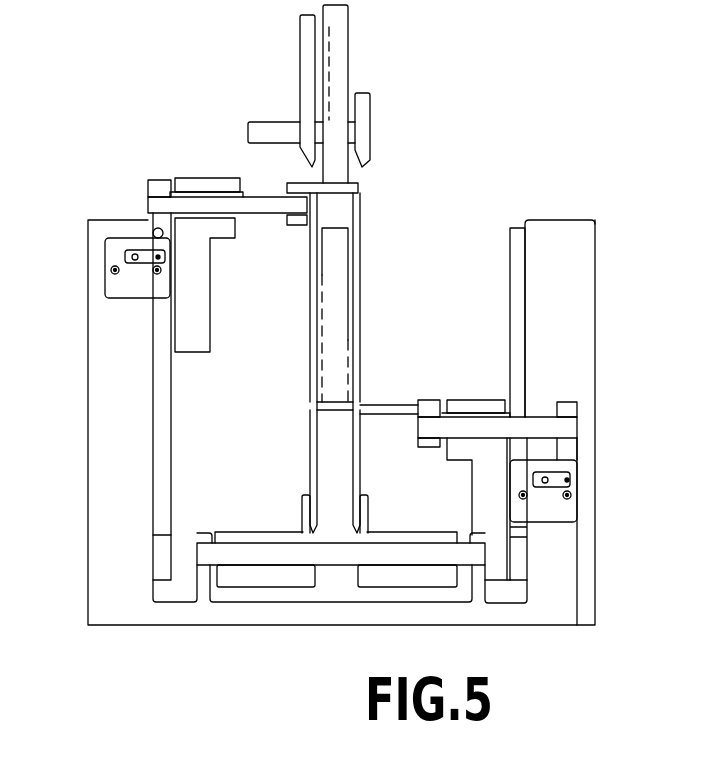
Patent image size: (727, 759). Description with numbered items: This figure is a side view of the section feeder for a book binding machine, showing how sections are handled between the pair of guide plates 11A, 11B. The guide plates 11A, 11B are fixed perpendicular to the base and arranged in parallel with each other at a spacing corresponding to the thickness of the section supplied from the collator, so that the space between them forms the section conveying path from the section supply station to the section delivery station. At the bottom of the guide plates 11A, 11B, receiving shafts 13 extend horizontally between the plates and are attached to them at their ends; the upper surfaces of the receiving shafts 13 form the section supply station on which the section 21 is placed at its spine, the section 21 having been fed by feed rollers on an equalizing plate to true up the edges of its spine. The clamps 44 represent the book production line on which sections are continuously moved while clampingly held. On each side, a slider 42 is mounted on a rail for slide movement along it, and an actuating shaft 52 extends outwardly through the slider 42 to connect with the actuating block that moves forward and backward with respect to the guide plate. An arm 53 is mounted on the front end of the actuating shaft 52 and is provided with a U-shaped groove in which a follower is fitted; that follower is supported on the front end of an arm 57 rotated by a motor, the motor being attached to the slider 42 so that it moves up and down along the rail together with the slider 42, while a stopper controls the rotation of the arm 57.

The guide plate 11A is at (363, 242).
The guide plate 11B is at (310, 433).
The receiving shaft 13 is at (333, 397).
The section 21 is at (345, 68).
The slider 42 is at (183, 318).
The clamp 44 is at (281, 114).
The actuating shaft 52 is at (253, 195).
The arm 53 is at (148, 182).
The arm 57 is at (107, 258).